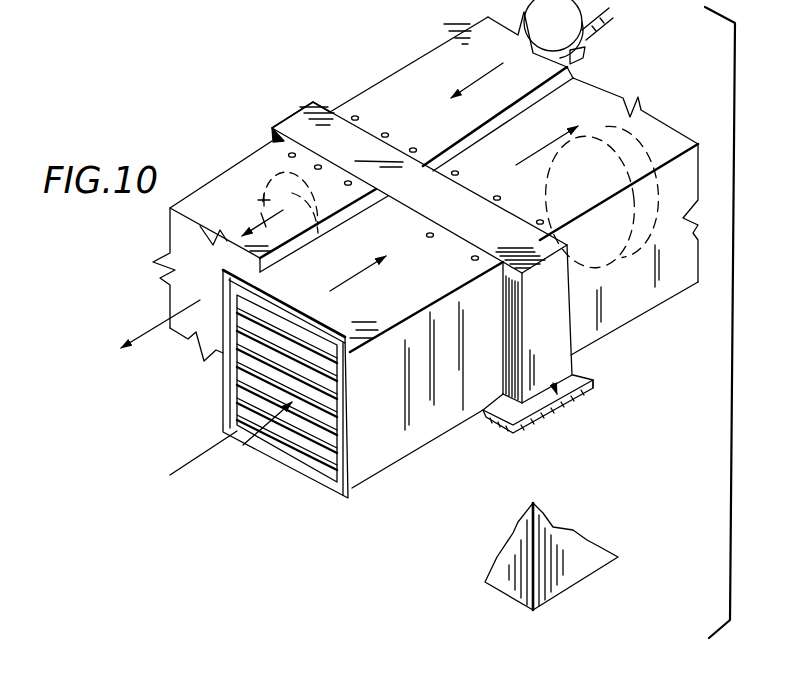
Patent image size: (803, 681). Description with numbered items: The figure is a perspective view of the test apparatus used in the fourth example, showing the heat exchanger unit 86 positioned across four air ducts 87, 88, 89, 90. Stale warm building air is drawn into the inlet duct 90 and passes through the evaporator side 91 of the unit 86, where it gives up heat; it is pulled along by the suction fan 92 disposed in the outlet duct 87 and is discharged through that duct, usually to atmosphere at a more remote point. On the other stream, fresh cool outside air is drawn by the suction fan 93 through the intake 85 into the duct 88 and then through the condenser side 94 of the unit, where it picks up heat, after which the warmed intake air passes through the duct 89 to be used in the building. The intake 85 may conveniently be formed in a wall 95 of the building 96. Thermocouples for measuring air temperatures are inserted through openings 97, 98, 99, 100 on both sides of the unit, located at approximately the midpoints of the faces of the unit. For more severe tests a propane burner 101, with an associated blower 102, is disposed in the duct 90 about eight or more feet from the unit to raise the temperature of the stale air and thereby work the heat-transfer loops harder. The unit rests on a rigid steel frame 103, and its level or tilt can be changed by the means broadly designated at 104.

The intake 85 is at (300, 452).
The heat exchanger unit 86 is at (272, 116).
The outlet duct 87 is at (249, 162).
The duct 88 is at (405, 458).
The duct 89 is at (661, 300).
The inlet duct 90 is at (440, 50).
The evaporator side 91 is at (298, 113).
The suction fan 92 is at (257, 200).
The suction fan 93 is at (613, 146).
The condenser side 94 is at (562, 330).
The wall 95 is at (508, 580).
The building 96 is at (590, 572).
The opening 97 is at (413, 148).
The opening 98 is at (348, 181).
The opening 99 is at (497, 196).
The opening 100 is at (475, 256).
The propane burner 101 is at (602, 26).
The blower 102 is at (577, 63).
The rigid steel frame 103 is at (542, 416).
The means for changing level or tilt 104 is at (575, 374).